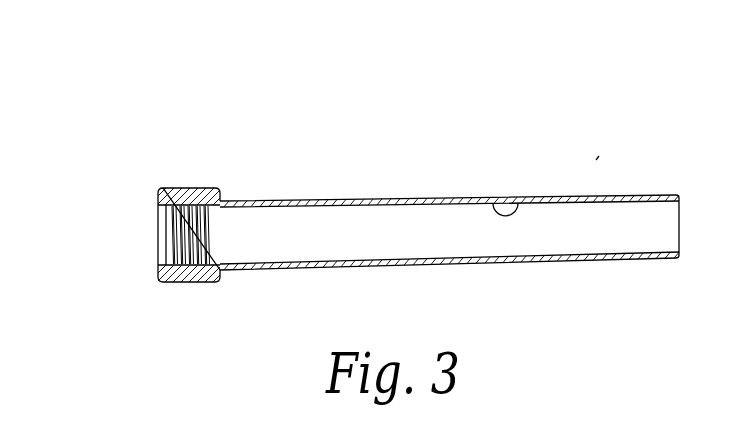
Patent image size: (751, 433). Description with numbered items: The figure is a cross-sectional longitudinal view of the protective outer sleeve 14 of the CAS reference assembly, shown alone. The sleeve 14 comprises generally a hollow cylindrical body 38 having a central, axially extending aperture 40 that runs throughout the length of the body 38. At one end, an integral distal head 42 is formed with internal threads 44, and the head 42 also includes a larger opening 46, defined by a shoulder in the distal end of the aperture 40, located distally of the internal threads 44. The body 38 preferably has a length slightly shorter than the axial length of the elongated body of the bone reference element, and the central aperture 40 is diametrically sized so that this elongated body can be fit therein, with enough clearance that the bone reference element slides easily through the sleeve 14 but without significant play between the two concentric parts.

The protective outer sleeve 14 is at (595, 161).
The hollow cylindrical body 38 is at (405, 199).
The central aperture 40 is at (518, 204).
The distal head 42 is at (195, 188).
The internal threads 44 is at (176, 262).
The larger opening 46 is at (160, 217).